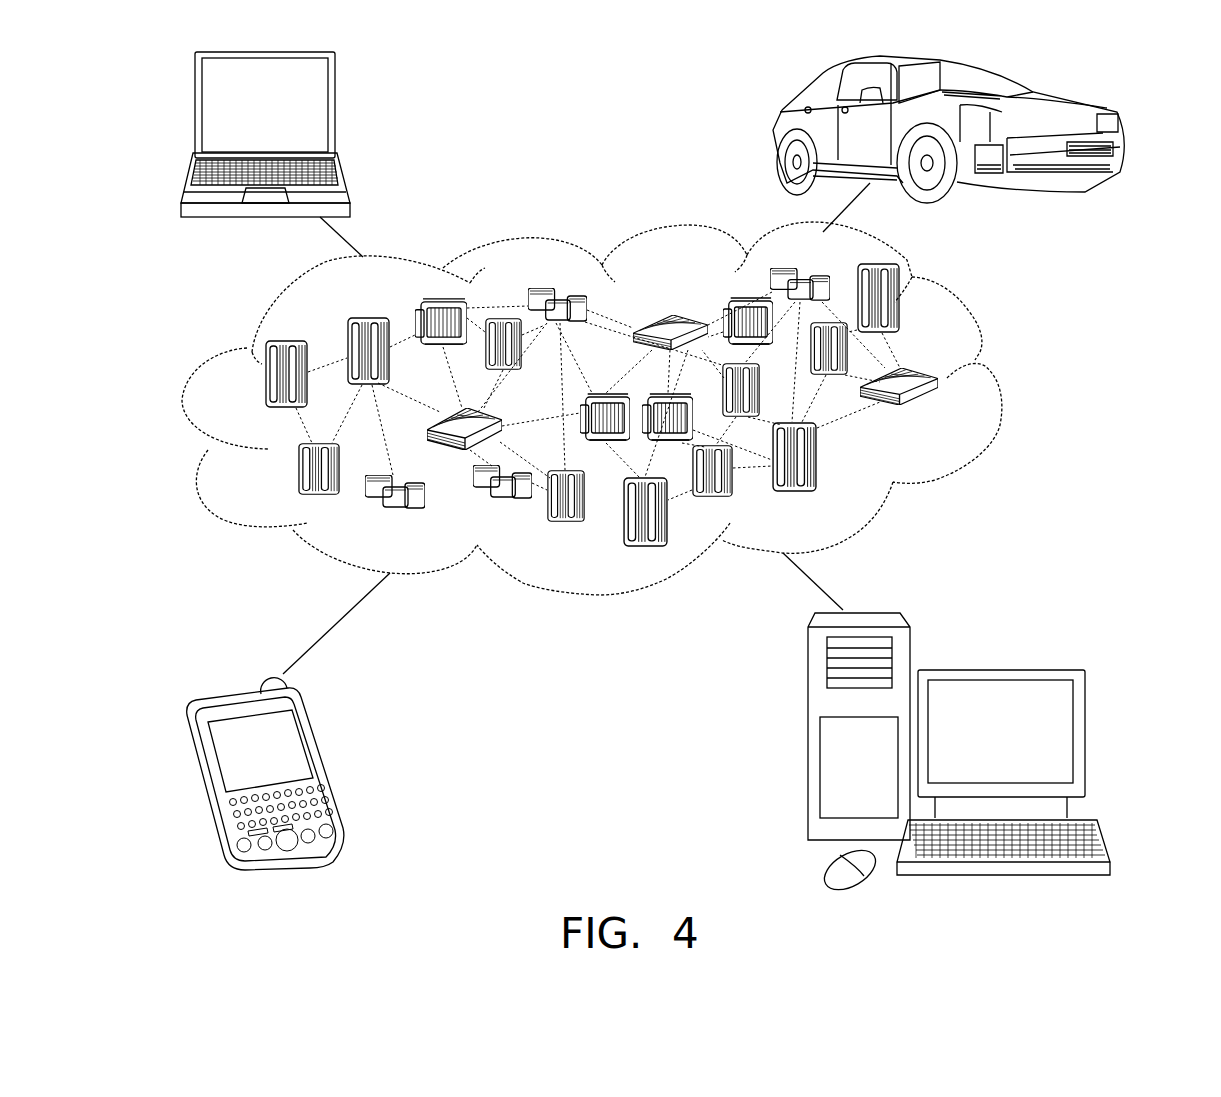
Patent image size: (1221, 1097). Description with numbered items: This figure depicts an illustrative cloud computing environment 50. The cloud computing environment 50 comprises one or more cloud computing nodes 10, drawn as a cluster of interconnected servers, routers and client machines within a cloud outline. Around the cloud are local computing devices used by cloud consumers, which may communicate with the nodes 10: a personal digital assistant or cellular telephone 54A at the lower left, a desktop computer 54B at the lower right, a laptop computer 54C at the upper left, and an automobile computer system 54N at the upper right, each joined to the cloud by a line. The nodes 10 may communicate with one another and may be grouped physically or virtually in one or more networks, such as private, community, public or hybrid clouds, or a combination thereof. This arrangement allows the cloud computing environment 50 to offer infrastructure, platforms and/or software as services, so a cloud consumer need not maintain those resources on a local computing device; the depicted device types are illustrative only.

The cloud computing nodes 10 is at (940, 413).
The cloud computing environment 50 is at (1000, 384).
The personal digital assistant or cellular telephone 54A is at (327, 764).
The desktop computer 54B is at (998, 668).
The laptop computer 54C is at (337, 113).
The automobile computer system 54N is at (778, 130).